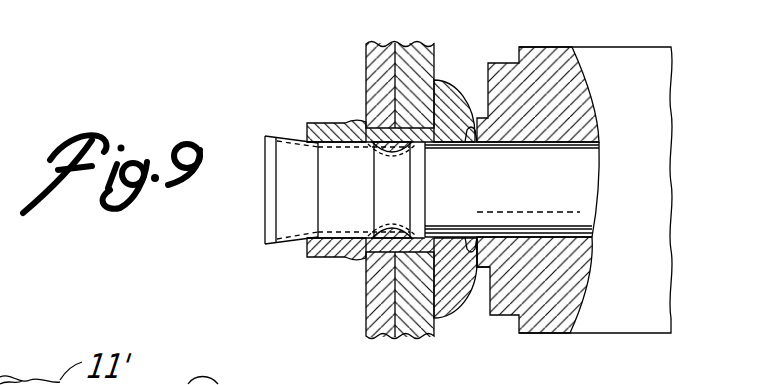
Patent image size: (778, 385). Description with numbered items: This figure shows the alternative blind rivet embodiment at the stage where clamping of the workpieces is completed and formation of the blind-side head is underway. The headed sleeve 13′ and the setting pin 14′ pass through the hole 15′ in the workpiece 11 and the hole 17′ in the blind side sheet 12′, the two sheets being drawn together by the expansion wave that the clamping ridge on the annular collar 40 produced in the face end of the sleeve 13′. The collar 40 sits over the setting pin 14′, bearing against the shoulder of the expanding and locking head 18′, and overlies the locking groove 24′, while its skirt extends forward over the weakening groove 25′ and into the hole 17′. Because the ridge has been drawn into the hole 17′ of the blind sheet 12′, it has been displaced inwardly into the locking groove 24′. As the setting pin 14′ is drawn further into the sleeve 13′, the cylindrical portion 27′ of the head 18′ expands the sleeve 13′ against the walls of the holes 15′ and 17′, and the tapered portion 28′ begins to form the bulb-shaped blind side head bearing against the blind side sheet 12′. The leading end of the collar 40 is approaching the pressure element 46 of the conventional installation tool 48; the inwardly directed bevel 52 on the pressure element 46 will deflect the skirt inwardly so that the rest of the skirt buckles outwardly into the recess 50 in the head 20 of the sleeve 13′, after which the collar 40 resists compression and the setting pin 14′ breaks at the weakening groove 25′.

The workpiece 11 is at (397, 192).
The blind side sheet 12′ is at (370, 63).
The headed sleeve 13′ is at (410, 138).
The setting pin 14′ is at (561, 173).
The hole 15′ is at (426, 248).
The hole 17′ is at (365, 248).
The expanding and locking head 18′ is at (245, 160).
The head of the sleeve 20 is at (440, 93).
The locking groove 24′ is at (375, 232).
The weakening groove 25′ is at (428, 200).
The cylindrical portion 27′ is at (332, 157).
The tapered portion 28′ is at (252, 189).
The annular collar 40 is at (388, 156).
The pressure element 46 is at (483, 264).
The installation tool 48 is at (636, 30).
The recess 50 is at (472, 145).
The inwardly directed bevel 52 is at (475, 227).